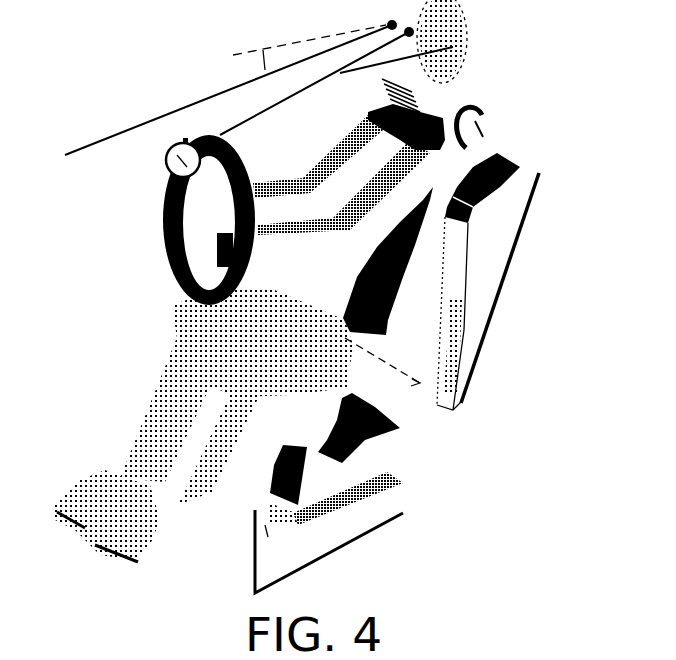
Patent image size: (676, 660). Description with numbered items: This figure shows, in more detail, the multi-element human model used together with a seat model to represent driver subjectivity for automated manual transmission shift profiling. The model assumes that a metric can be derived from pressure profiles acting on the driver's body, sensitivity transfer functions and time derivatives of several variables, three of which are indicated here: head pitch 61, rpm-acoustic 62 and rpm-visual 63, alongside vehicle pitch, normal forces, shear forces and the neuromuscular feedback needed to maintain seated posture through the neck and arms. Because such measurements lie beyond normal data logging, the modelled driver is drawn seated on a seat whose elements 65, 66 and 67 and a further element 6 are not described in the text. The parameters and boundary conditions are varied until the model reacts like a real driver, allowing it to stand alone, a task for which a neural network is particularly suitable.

The sensor 6 is at (483, 115).
The head pitch 61 is at (227, 88).
The rpm-acoustic 62 is at (468, 33).
The rpm-visual 63 is at (247, 120).
The seat back 65 is at (479, 283).
The seat cushion 66 is at (373, 442).
The seat base 67 is at (337, 520).